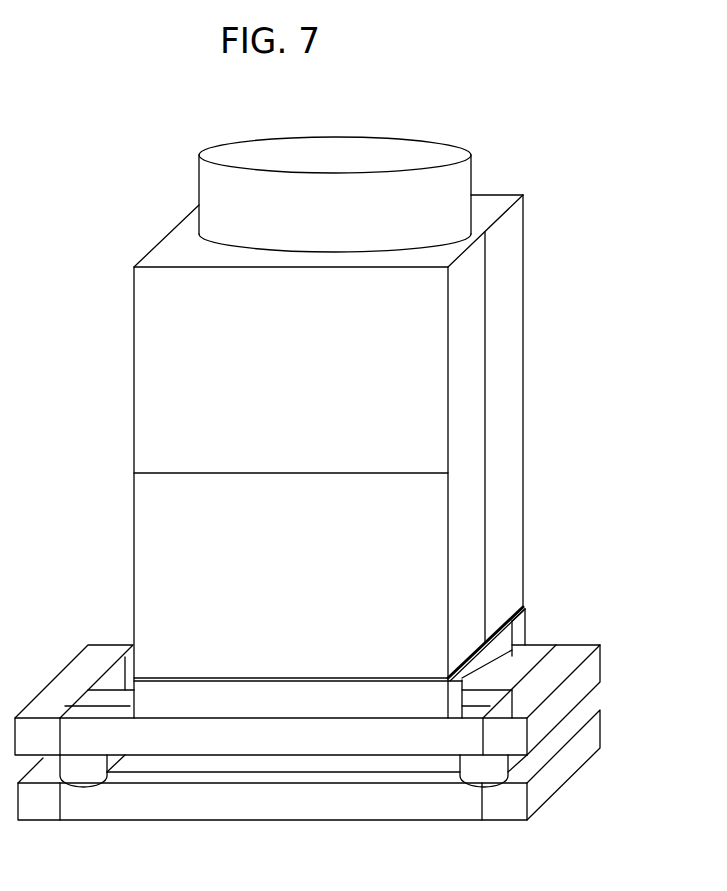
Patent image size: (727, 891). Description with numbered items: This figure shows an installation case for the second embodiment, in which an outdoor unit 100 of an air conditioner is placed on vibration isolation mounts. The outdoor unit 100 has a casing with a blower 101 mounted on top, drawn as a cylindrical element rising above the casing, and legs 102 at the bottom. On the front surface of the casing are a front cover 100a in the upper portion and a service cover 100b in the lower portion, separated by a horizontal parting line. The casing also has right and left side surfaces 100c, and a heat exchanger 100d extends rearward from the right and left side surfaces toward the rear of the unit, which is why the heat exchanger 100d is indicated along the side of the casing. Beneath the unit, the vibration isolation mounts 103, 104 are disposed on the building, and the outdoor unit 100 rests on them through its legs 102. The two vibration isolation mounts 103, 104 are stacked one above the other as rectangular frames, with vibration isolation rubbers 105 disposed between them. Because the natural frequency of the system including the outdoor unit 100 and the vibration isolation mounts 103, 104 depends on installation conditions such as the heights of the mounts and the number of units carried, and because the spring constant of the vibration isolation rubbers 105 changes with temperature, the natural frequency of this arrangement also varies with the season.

The outdoor unit 100 is at (389, 414).
The front cover 100a is at (405, 381).
The service cover 100b is at (408, 527).
The side surface 100c is at (467, 467).
The heat exchanger 100d is at (523, 317).
The blower 101 is at (455, 159).
The leg 102 is at (525, 628).
The vibration isolation mount 103 is at (587, 675).
The vibration isolation mount 104 is at (587, 738).
The vibration isolation rubber 105 is at (478, 765).